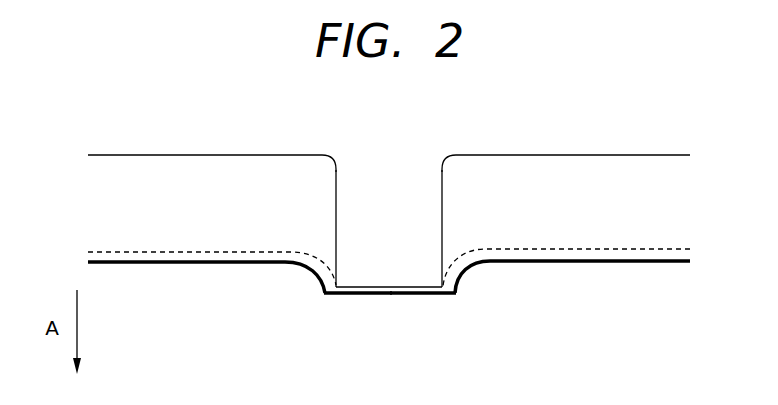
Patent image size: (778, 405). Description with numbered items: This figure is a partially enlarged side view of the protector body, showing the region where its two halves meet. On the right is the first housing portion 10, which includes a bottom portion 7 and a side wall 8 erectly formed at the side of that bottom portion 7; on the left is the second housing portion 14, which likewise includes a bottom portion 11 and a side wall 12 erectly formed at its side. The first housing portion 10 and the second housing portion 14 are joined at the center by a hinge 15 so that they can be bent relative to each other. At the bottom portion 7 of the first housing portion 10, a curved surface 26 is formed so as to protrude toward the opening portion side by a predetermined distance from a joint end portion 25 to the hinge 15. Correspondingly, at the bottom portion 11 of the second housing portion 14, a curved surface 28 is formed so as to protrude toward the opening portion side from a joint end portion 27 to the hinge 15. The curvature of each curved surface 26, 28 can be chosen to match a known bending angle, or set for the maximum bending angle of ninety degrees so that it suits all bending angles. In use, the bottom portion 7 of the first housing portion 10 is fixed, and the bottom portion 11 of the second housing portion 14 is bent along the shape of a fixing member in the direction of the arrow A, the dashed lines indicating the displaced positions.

The second housing portion 14 is at (155, 135).
The side wall 12 is at (251, 168).
The first housing portion 10 is at (622, 133).
The side wall 8 is at (524, 166).
The hinge 15 is at (392, 285).
The bottom portion 11 is at (197, 242).
The bottom portion 7 is at (579, 242).
The curved surface 28 is at (300, 278).
The curved surface 26 is at (478, 279).
The joint end portion 27 is at (330, 298).
The joint end portion 25 is at (448, 298).